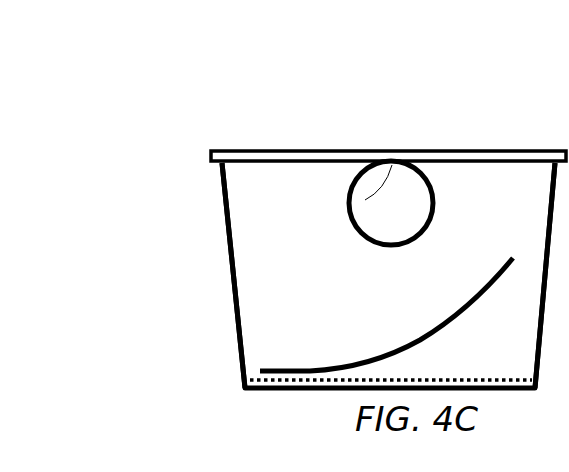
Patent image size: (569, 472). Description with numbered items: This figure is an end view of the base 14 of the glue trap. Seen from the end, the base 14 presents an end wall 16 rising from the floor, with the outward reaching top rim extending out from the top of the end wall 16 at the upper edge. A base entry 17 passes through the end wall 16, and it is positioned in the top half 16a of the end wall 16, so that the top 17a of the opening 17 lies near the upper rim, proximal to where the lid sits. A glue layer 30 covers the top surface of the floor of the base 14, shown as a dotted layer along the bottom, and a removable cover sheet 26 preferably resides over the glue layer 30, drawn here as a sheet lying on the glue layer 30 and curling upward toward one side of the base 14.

The base 14 is at (378, 95).
The end wall 16 is at (514, 275).
The top half of end wall 16a is at (212, 167).
The base entry 17 is at (391, 203).
The top of opening 17a is at (365, 200).
The removable cover sheet 26 is at (405, 345).
The glue layer 30 is at (470, 378).